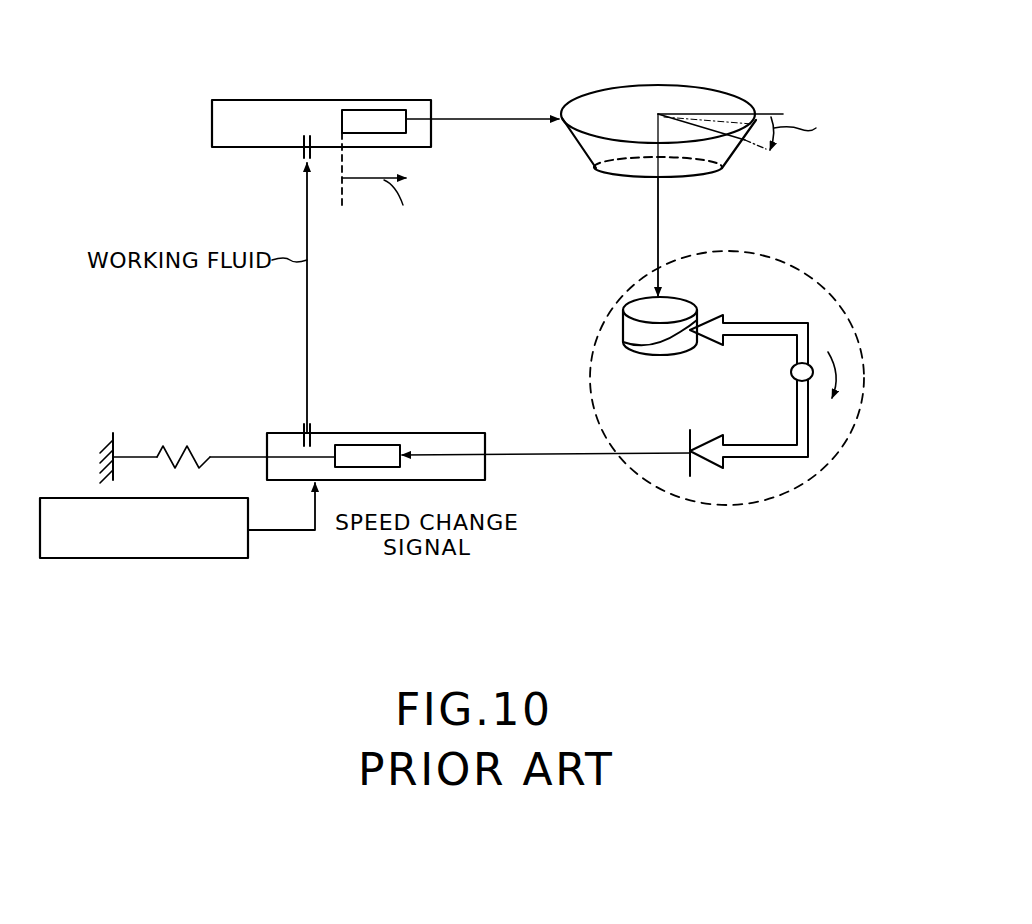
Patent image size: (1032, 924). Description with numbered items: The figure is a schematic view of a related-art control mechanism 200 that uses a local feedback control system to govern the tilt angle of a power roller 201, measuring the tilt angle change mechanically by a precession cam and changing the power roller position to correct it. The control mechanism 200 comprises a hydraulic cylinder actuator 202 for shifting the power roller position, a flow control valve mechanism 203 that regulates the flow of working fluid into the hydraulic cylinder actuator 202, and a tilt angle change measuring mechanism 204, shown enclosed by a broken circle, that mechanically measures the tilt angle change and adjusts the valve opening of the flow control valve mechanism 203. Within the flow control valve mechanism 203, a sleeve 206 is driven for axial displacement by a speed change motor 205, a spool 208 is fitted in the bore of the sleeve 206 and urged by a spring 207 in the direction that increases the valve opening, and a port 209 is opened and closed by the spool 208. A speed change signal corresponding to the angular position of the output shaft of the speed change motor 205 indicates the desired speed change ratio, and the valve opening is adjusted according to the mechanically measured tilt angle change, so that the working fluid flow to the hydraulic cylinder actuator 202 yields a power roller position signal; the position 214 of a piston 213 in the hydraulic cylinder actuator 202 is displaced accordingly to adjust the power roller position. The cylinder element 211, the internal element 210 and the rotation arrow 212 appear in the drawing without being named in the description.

The control mechanism 200 is at (838, 34).
The power roller 201 is at (669, 84).
The hydraulic cylinder actuator 202 is at (321, 81).
The flow control valve mechanism 203 is at (217, 399).
The tilt angle change measuring mechanism 204 is at (716, 359).
The speed change motor 205 is at (136, 559).
The sleeve 206 is at (376, 428).
The spring 207 is at (178, 441).
The spool 208 is at (361, 445).
The port 209 is at (303, 425).
The piston 210 is at (661, 336).
The hydraulic cylinder 211 is at (617, 344).
The rotation direction arrow 212 is at (822, 311).
The piston 213 is at (391, 110).
The position 214 is at (345, 200).